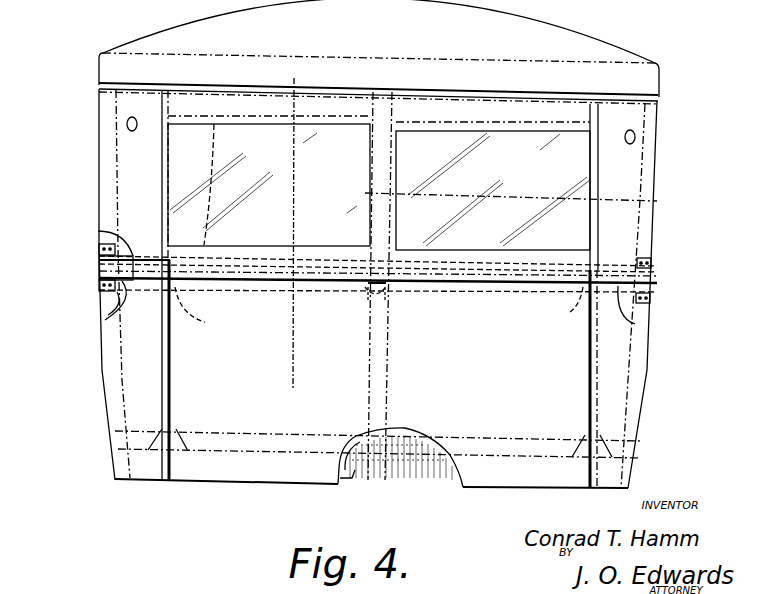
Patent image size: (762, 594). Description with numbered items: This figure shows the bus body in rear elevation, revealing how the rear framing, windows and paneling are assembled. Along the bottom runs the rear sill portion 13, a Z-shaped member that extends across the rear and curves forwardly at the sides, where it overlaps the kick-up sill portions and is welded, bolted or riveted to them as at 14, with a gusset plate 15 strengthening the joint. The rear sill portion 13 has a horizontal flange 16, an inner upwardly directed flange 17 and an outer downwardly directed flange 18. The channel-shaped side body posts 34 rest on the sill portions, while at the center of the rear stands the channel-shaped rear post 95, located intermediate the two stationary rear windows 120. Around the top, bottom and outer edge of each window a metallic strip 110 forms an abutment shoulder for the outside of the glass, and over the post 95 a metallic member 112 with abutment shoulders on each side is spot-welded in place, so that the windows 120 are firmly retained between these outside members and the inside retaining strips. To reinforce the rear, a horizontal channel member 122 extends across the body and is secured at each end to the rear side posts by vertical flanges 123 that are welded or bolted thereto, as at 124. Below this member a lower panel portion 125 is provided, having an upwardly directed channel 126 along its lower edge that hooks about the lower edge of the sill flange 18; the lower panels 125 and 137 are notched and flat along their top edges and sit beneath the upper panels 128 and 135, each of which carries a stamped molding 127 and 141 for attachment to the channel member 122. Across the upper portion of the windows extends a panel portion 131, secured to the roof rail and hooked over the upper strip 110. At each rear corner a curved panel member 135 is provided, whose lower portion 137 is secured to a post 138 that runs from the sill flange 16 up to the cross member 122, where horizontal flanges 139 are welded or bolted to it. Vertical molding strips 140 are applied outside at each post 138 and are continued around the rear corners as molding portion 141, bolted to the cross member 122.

The rear sill portion 13 is at (290, 470).
The rigid securing connection 14 is at (320, 78).
The gusset plate 15 is at (365, 193).
The horizontal flange 16 is at (441, 491).
The inner upwardly directed flange 17 is at (407, 445).
The outer downwardly directed flange 18 is at (389, 482).
The side body post 34 is at (107, 308).
The rear post 95 is at (396, 108).
The metallic strip 110 is at (373, 148).
The metallic member 112 is at (397, 155).
The rear window 120 is at (379, 183).
The horizontal channel member 122 is at (99, 274).
The vertical flange 123 is at (99, 248).
The flange fastening 124 is at (99, 260).
The lower panel portion 125 is at (377, 403).
The upwardly directed channel 126 is at (345, 487).
The molding 127 is at (297, 290).
The upper panel 128 is at (248, 249).
The panel portion 131 is at (500, 108).
The curved panel member 135 is at (166, 185).
The lower portion of rear corner panel 137 is at (613, 380).
The post 138 is at (177, 362).
The horizontal flange 139 is at (203, 323).
The vertical molding strip 140 is at (172, 400).
The molding portion 141 is at (635, 324).